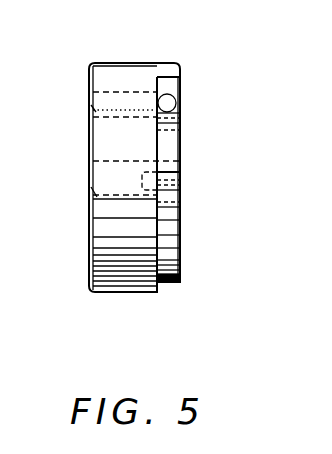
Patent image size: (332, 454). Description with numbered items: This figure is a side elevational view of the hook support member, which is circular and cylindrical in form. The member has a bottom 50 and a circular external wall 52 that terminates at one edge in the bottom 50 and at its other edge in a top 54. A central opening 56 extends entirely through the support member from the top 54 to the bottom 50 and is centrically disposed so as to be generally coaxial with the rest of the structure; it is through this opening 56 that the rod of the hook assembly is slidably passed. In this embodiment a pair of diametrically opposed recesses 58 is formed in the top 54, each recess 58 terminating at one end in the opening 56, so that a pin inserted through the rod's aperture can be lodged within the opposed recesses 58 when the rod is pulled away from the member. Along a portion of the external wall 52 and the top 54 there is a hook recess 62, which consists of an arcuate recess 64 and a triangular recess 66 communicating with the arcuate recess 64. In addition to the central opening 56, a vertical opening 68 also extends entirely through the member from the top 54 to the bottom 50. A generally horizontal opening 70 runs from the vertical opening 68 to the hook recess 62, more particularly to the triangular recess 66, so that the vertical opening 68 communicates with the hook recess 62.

The bottom 50 is at (88, 229).
The circular external wall 52 is at (125, 245).
The top 54 is at (181, 249).
The opening 56 is at (88, 192).
The recesses 58 is at (181, 180).
The hook recess 62 is at (172, 288).
The arcuate recess 64 is at (158, 215).
The triangular recess 66 is at (168, 131).
The vertical opening 68 is at (88, 100).
The horizontal opening 70 is at (164, 108).